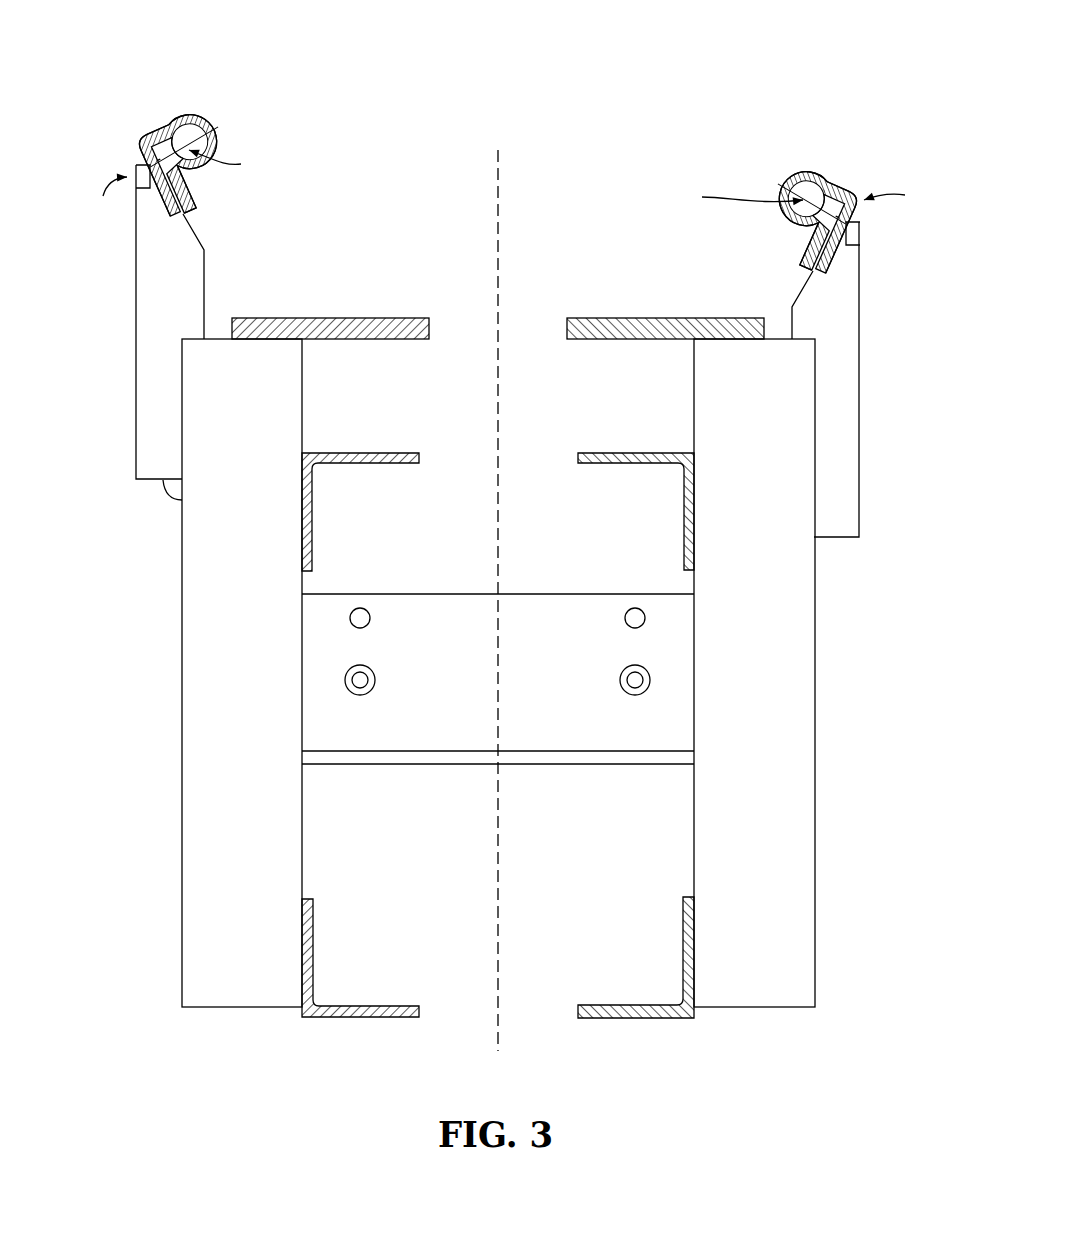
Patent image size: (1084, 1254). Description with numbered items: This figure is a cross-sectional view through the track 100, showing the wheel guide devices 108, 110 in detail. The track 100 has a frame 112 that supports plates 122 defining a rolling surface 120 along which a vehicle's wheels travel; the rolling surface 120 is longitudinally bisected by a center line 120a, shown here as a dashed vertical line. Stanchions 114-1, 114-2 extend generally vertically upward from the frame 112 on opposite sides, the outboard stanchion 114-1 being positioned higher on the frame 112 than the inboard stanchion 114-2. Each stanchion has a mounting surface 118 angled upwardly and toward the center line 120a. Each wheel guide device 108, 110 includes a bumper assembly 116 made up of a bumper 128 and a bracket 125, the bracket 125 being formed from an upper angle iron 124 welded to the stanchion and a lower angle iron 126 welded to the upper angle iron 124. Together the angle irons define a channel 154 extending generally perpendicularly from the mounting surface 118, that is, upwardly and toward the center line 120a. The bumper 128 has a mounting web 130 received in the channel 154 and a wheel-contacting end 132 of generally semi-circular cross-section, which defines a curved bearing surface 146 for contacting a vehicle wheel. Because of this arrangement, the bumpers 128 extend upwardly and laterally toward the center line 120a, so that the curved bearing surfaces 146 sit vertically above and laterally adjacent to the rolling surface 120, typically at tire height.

The track 100 is at (504, 546).
The wheel guide device 108 is at (163, 102).
The wheel guide device 110 is at (859, 141).
The frame 112 is at (792, 637).
The stanchion 114-1 is at (136, 385).
The stanchion 114-2 is at (859, 384).
The bumper assembly 116 is at (209, 182).
The mounting surface 118 is at (198, 238).
The rolling surface 120 is at (348, 237).
The center line 120a is at (499, 168).
The plate 122 is at (383, 317).
The upper angle iron 124 is at (140, 157).
The bracket 125 is at (511, 201).
The lower angle iron 126 is at (190, 197).
The bumper 128 is at (170, 153).
The mounting web 130 is at (160, 130).
The wheel-contacting end 132 is at (193, 137).
The curved bearing surface 146 is at (217, 137).
The channel 154 is at (496, 181).